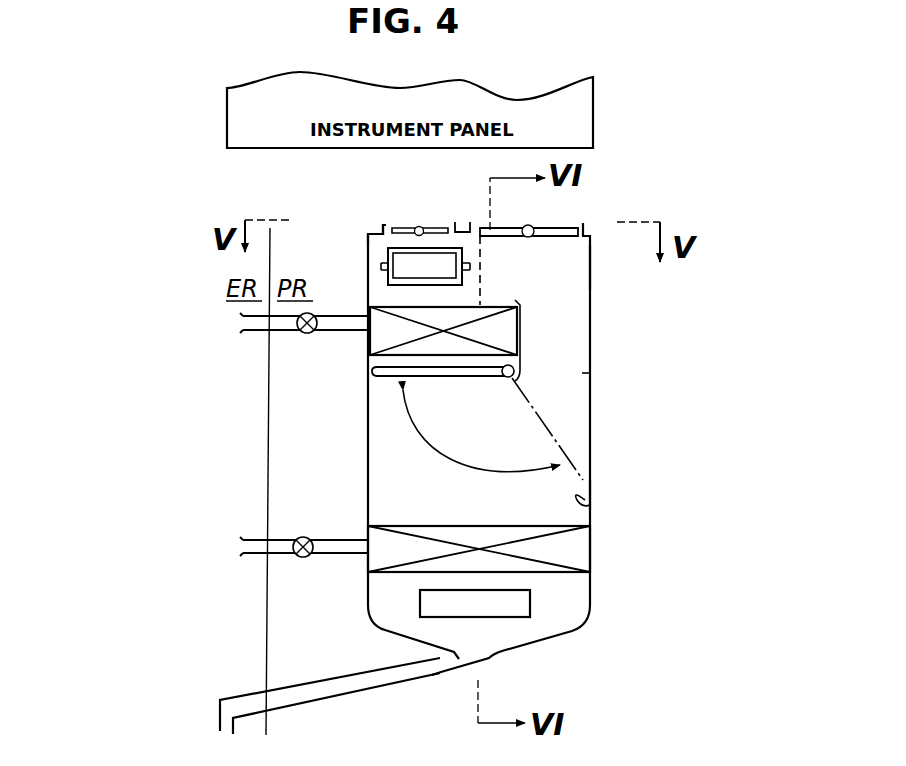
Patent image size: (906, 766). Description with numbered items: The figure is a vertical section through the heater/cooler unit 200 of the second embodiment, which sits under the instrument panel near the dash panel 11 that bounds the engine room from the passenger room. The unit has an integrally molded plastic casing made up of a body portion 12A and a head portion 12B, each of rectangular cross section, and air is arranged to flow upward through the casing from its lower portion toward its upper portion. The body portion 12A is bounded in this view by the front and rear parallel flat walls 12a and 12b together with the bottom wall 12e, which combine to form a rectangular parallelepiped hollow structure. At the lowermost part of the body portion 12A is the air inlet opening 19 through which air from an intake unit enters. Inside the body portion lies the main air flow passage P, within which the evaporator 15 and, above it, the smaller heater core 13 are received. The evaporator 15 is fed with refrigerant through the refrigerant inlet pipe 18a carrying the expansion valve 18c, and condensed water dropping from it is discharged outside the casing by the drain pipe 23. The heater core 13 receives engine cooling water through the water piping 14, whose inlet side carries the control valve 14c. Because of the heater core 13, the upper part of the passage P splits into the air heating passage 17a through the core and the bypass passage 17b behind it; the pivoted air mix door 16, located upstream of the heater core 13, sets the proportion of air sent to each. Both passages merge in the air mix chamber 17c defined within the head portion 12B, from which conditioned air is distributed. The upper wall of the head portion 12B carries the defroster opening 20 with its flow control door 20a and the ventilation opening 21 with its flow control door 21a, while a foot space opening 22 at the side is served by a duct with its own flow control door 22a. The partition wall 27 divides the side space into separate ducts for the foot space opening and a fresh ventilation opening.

The heater/cooler unit 200 is at (730, 167).
The dash panel 11 is at (267, 415).
The front flat wall 12a is at (368, 460).
The rear flat wall 12b is at (592, 430).
The bottom wall 12e is at (535, 645).
The body portion 12A is at (605, 492).
The head portion 12B is at (605, 268).
The heater core 13 is at (505, 327).
The refrigerant pipe 14 is at (258, 332).
The control valve 14c is at (305, 334).
The evaporator 15 is at (572, 545).
The air mix door 16 is at (474, 381).
The air heating passage 17a is at (393, 362).
The bypass passage 17b is at (582, 374).
The air mix chamber 17c is at (510, 285).
The refrigerant inlet pipe 18a is at (258, 540).
The expansion valve 18c is at (305, 538).
The air inlet opening 19 is at (522, 600).
The defroster opening 20 is at (385, 223).
The flow control door 20a is at (433, 226).
The ventilation opening 21 is at (470, 222).
The flow control door 21a is at (525, 227).
The foot space opening 22 is at (400, 274).
The flow control door 22a is at (410, 262).
The drain pipe 23 is at (378, 690).
The partition wall 27 is at (482, 271).
The main air flow passage P is at (586, 501).